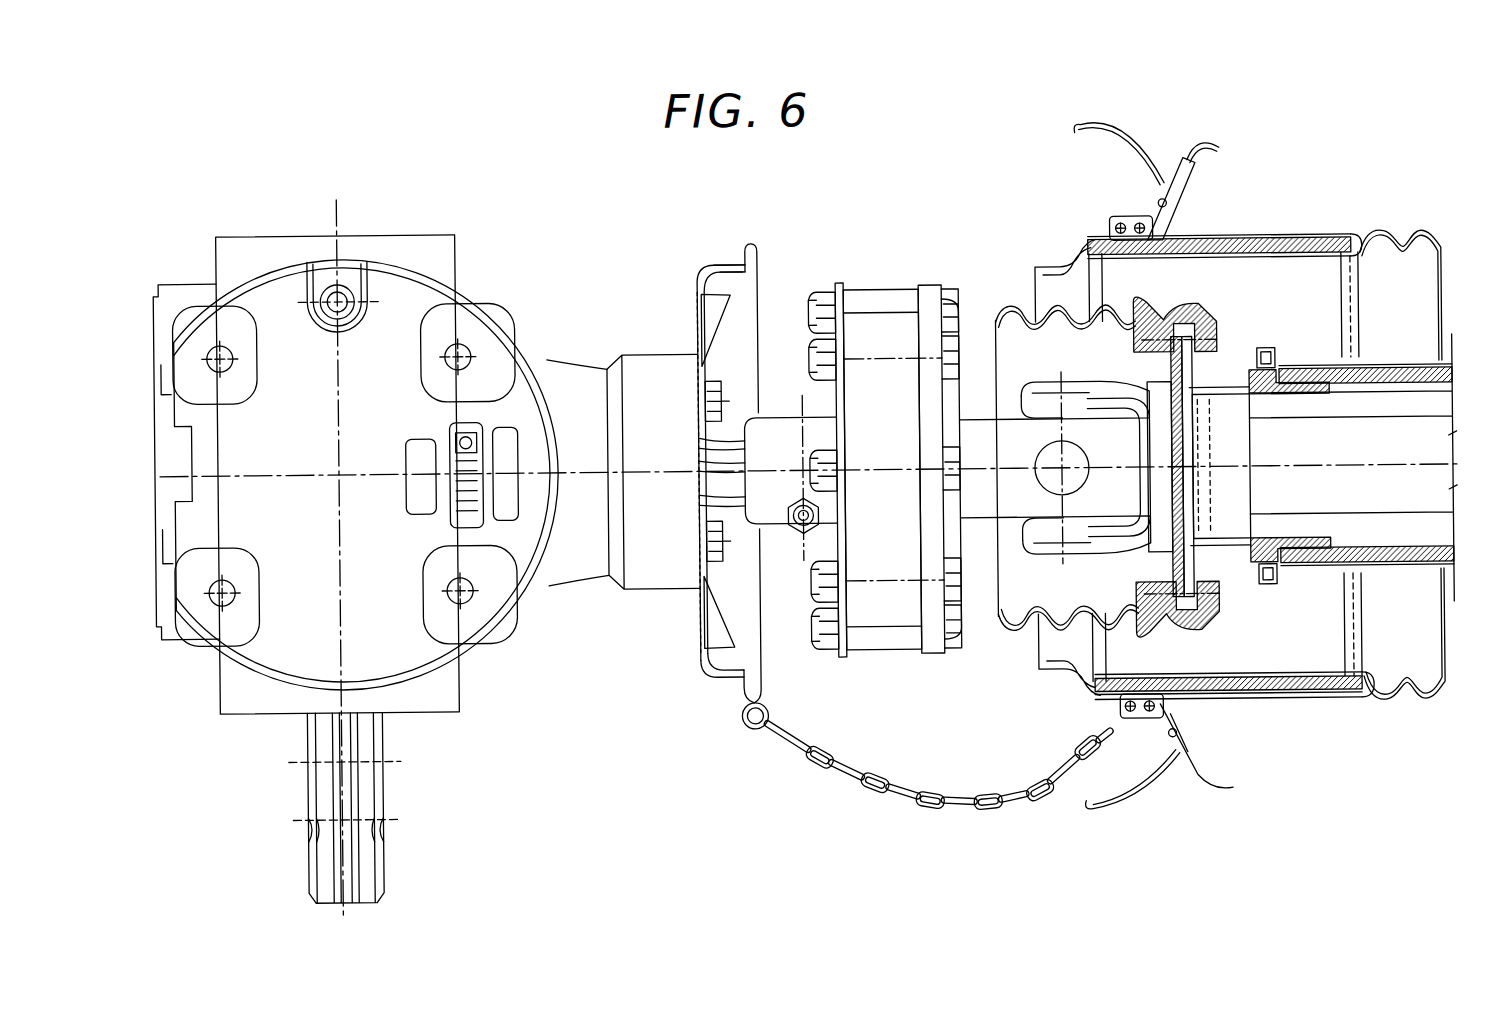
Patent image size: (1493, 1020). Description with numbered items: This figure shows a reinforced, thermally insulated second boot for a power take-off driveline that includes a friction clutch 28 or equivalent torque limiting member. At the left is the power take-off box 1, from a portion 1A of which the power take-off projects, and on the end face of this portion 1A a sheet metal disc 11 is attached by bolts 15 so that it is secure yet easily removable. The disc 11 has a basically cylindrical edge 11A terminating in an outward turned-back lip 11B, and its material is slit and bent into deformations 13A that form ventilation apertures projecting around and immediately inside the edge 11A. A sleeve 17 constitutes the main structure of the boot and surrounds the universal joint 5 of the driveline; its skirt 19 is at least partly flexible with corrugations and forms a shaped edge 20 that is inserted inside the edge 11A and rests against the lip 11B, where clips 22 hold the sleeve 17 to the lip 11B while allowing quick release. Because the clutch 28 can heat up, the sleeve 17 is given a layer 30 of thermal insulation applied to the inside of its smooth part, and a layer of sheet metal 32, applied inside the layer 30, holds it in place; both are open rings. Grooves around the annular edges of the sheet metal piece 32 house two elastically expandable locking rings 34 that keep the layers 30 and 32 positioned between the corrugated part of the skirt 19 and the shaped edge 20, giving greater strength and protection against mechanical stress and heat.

The power take-off box 1 is at (489, 667).
The portion of the box 1A is at (643, 575).
The disc 11 is at (699, 275).
The cylindrical edge 11A is at (733, 270).
The outward turned-back lip 11B is at (747, 247).
The deformations 13A is at (700, 321).
The bolts 15 is at (698, 402).
The friction clutch 28 is at (887, 295).
The universal joint 5 is at (1028, 573).
The shaped edge 20 is at (1045, 272).
The clips 22 is at (1152, 208).
The layer of thermal insulation 30 is at (1258, 249).
The layer of sheet metal 32 is at (1292, 684).
The sleeve 17 is at (1371, 234).
The skirt 19 is at (1421, 243).
The locking rings 34 is at (1365, 635).